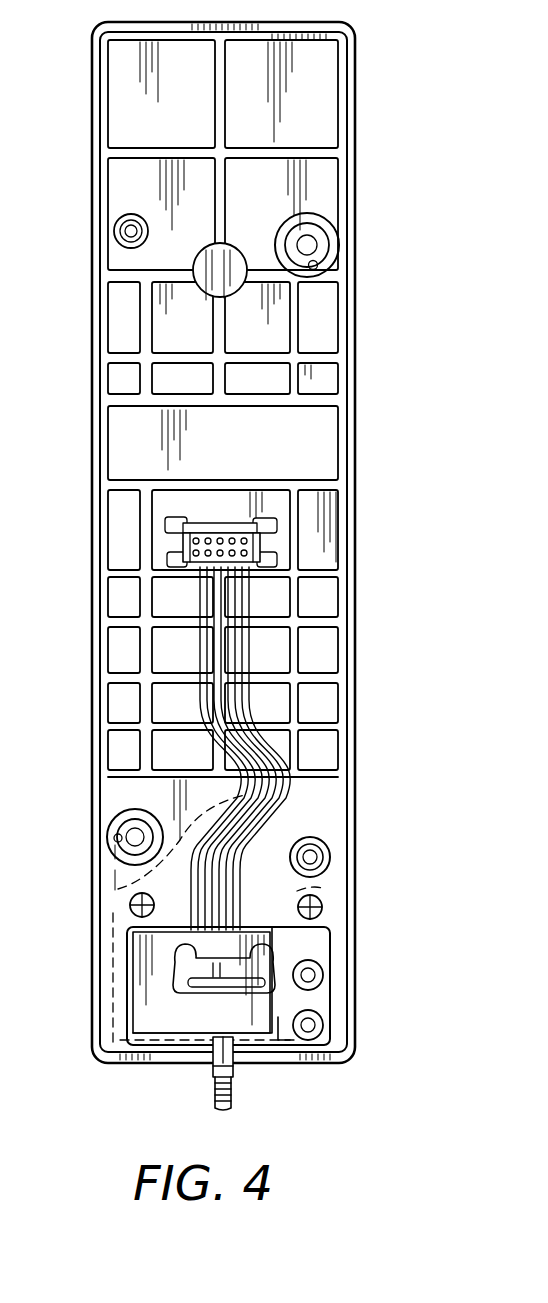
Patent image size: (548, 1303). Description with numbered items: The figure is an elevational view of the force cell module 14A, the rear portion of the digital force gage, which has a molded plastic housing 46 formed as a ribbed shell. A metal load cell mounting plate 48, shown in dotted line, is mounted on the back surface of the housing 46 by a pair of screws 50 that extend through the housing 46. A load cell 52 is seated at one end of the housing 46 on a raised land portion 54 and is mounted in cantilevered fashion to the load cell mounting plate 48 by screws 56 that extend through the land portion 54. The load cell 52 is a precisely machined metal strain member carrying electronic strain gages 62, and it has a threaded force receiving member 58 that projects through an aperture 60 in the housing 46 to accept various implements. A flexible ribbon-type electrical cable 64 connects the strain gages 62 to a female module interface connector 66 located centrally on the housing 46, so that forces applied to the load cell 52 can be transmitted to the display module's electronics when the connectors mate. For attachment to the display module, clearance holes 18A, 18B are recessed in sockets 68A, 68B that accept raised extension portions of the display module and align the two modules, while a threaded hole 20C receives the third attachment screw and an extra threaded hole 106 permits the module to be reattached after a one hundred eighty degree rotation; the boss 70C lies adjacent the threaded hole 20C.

The force cell module 14A is at (356, 549).
The molded plastic housing 46 is at (318, 105).
The extra threaded hole 106 is at (118, 224).
The clearance hole 18A is at (305, 245).
The socket 68A is at (317, 266).
The female module interface connector 66 is at (183, 541).
The flexible ribbon-type electrical cable 64 is at (257, 660).
The clearance hole 18B is at (136, 830).
The socket 68B is at (115, 832).
The threaded hole 20C is at (313, 857).
The screw hole 70C is at (313, 838).
The screws 50 is at (130, 903).
The load cell mounting plate 48 is at (110, 943).
The load cell 52 is at (160, 1006).
The electronic strain gages 62 is at (125, 965).
The aperture 60 is at (222, 1063).
The force receiving member 58 is at (213, 1077).
The raised land portion 54 is at (278, 1042).
The screws 56 is at (323, 1025).